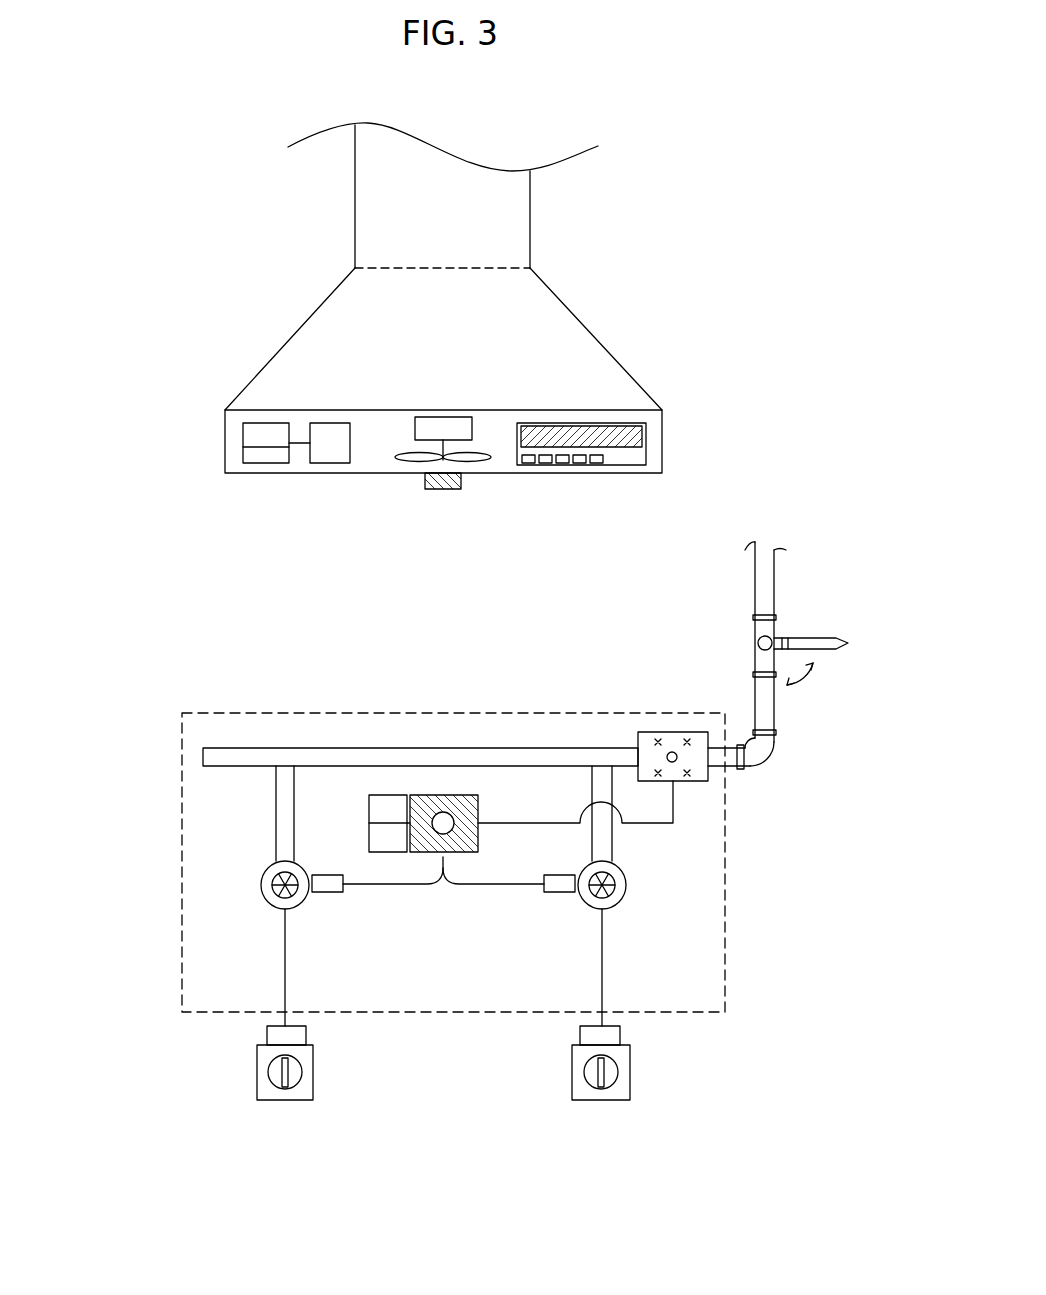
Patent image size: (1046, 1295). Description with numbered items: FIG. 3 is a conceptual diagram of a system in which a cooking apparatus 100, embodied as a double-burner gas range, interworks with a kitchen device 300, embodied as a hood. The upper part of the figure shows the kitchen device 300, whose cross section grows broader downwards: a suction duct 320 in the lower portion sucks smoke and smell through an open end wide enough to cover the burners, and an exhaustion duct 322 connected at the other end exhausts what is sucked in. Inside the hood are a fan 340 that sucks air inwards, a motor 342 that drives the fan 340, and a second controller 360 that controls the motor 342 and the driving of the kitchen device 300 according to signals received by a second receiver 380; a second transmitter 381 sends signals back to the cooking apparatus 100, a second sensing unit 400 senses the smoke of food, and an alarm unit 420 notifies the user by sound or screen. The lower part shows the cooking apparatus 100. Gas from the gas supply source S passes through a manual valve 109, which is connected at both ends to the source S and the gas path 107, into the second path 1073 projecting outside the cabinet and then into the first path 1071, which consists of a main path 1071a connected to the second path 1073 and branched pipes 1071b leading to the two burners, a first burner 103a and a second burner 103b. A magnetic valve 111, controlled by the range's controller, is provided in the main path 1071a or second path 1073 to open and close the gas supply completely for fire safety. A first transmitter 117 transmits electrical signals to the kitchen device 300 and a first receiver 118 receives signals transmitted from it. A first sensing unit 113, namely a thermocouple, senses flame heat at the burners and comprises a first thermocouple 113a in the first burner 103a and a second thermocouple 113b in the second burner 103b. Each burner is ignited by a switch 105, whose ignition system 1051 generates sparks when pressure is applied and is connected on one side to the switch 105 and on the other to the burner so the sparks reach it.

The kitchen device 300 is at (443, 344).
The exhaustion duct 322 is at (512, 222).
The suction duct 320 is at (570, 322).
The second transmitter 381 is at (250, 435).
The second receiver 380 is at (266, 460).
The second controller 360 is at (330, 460).
The motor 342 is at (468, 428).
The fan 340 is at (413, 461).
The second sensing unit 400 is at (443, 489).
The alarm unit 420 is at (643, 440).
The cooking apparatus 100 is at (177, 760).
The gas path 107 is at (442, 724).
The first path 1071 is at (442, 752).
The main path 1071a is at (258, 755).
The branched pipes 1071b is at (280, 848).
The second path 1073 is at (694, 710).
The gas supply source S is at (770, 600).
The manual valve 109 is at (788, 628).
The magnetic valve 111 is at (703, 777).
The first transmitter 117 is at (388, 802).
The first receiver 118 is at (382, 843).
The first burner 103a is at (268, 895).
The second burner 103b is at (615, 895).
The first sensing unit 113 is at (443, 1016).
The first thermocouple 113a is at (325, 892).
The second thermocouple 113b is at (563, 892).
The ignition system 1051 is at (270, 1037).
The switch 105 is at (285, 1100).